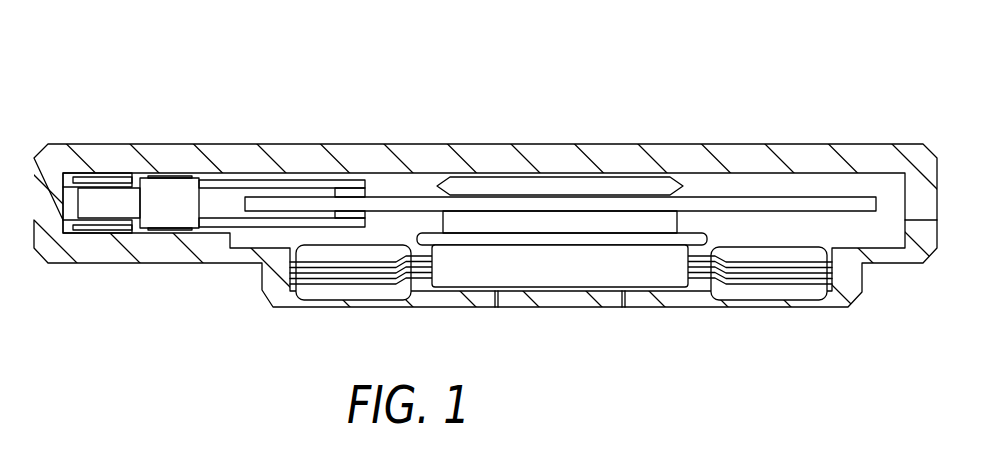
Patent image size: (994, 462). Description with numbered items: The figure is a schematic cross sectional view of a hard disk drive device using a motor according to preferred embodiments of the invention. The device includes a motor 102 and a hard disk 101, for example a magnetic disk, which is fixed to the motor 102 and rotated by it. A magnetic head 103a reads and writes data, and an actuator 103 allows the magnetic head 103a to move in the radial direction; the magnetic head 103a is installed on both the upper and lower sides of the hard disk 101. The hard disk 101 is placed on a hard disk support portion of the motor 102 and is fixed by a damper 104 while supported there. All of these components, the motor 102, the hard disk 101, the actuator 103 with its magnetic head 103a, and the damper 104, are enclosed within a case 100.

The case 100 is at (573, 160).
The hard disk 101 is at (757, 203).
The motor 102 is at (635, 322).
The actuator 103 is at (263, 233).
The magnetic head 103a is at (355, 188).
The damper 104 is at (472, 188).